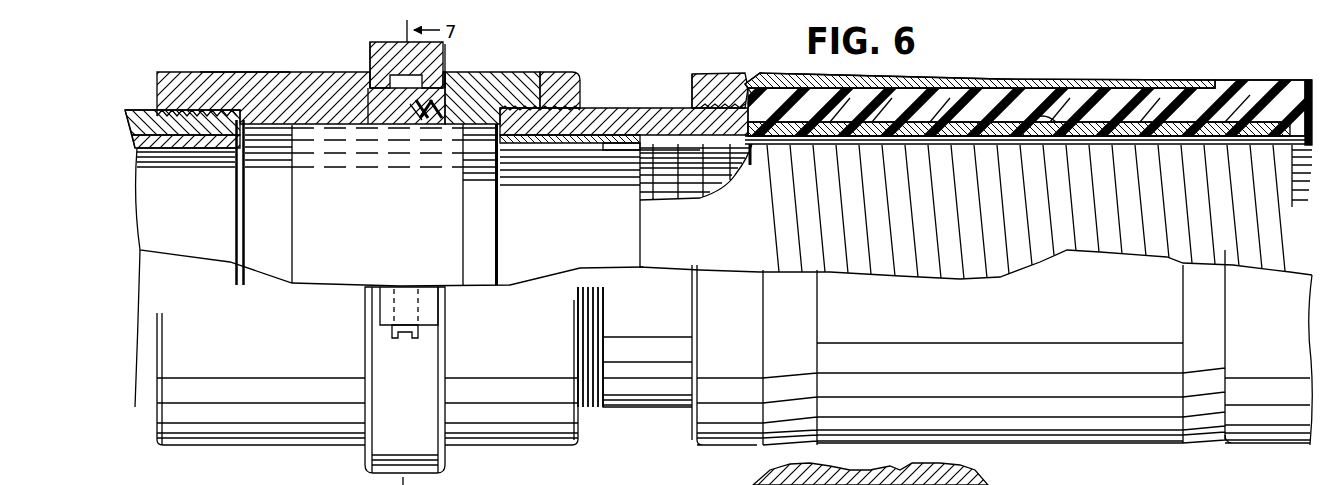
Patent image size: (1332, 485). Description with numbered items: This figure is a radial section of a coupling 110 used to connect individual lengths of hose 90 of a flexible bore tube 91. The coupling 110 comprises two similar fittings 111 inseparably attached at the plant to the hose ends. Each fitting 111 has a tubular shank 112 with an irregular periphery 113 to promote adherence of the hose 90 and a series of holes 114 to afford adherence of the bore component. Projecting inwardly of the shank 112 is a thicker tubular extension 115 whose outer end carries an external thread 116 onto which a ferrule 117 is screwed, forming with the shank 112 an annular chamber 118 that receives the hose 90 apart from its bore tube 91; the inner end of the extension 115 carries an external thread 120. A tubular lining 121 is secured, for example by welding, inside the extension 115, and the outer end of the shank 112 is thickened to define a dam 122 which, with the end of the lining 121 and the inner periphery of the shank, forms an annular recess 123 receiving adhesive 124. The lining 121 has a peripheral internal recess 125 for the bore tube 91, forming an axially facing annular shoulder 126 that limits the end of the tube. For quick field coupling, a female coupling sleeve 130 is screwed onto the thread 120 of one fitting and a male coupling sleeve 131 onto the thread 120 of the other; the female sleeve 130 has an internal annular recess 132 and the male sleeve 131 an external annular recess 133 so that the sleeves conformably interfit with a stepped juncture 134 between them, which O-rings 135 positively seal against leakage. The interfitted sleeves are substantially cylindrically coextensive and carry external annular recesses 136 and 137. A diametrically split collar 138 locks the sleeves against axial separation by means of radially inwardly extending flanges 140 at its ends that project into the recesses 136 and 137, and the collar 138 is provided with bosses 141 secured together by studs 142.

The hose 90 is at (1237, 100).
The flexible bore tube 91 is at (652, 212).
The coupling 110 is at (989, 73).
The fitting 111 is at (143, 100).
The tubular shank 112 is at (1153, 120).
The irregular periphery 113 is at (1042, 120).
The holes 114 is at (940, 130).
The tubular extension 115 is at (183, 148).
The external thread 116 is at (696, 75).
The ferrule 117 is at (723, 82).
The annular chamber 118 is at (753, 90).
The external thread 120 is at (200, 108).
The tubular lining 121 is at (215, 150).
The dam 122 is at (1250, 120).
The annular recess 123 is at (838, 120).
The adhesive 124 is at (883, 117).
The peripheral internal recess 125 is at (618, 157).
The annular shoulder 126 is at (646, 152).
The female coupling sleeve 130 is at (493, 80).
The male coupling sleeve 131 is at (238, 74).
The internal annular recess 132 is at (465, 126).
The external annular recess 133 is at (423, 110).
The stepped juncture 134 is at (452, 88).
The O-rings 135 is at (413, 122).
The external annular recess 136 is at (440, 60).
The external annular recess 137 is at (372, 46).
The collar 138 is at (400, 48).
The flanges 140 is at (368, 112).
The bosses 141 is at (383, 300).
The studs 142 is at (393, 333).